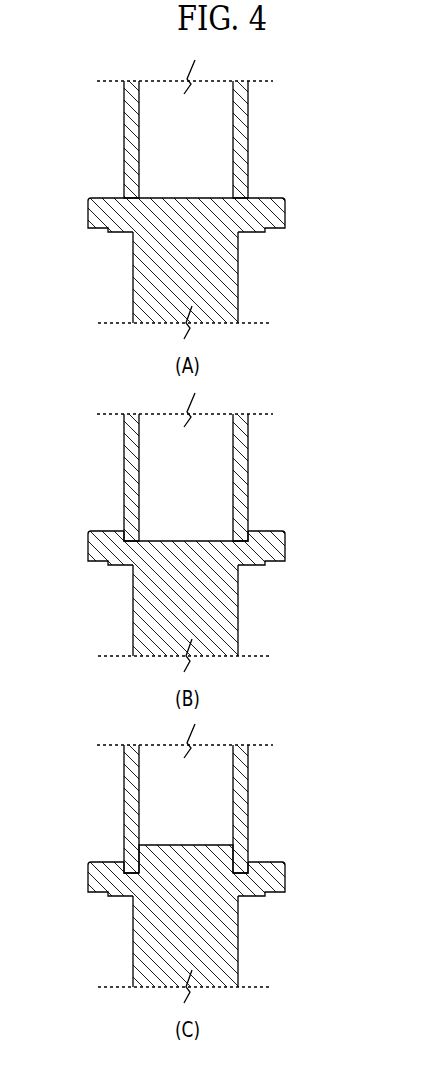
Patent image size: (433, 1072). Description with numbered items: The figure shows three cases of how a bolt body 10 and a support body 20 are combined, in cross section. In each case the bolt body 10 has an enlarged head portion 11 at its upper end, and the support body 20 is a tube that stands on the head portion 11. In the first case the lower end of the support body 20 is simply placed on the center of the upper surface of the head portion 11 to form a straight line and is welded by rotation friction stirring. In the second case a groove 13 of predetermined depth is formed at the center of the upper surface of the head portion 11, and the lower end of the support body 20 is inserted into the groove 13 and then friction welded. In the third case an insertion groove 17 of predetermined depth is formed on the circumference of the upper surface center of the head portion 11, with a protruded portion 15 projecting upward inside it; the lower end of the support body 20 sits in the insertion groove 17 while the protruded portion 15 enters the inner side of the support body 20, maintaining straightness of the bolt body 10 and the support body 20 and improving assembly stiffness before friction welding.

The bolt body 10 is at (131, 280).
The head portion 11 is at (88, 206).
The groove 13 is at (197, 534).
The protruded portion 15 is at (197, 838).
The insertion groove 17 is at (250, 847).
The support body 20 is at (122, 137).